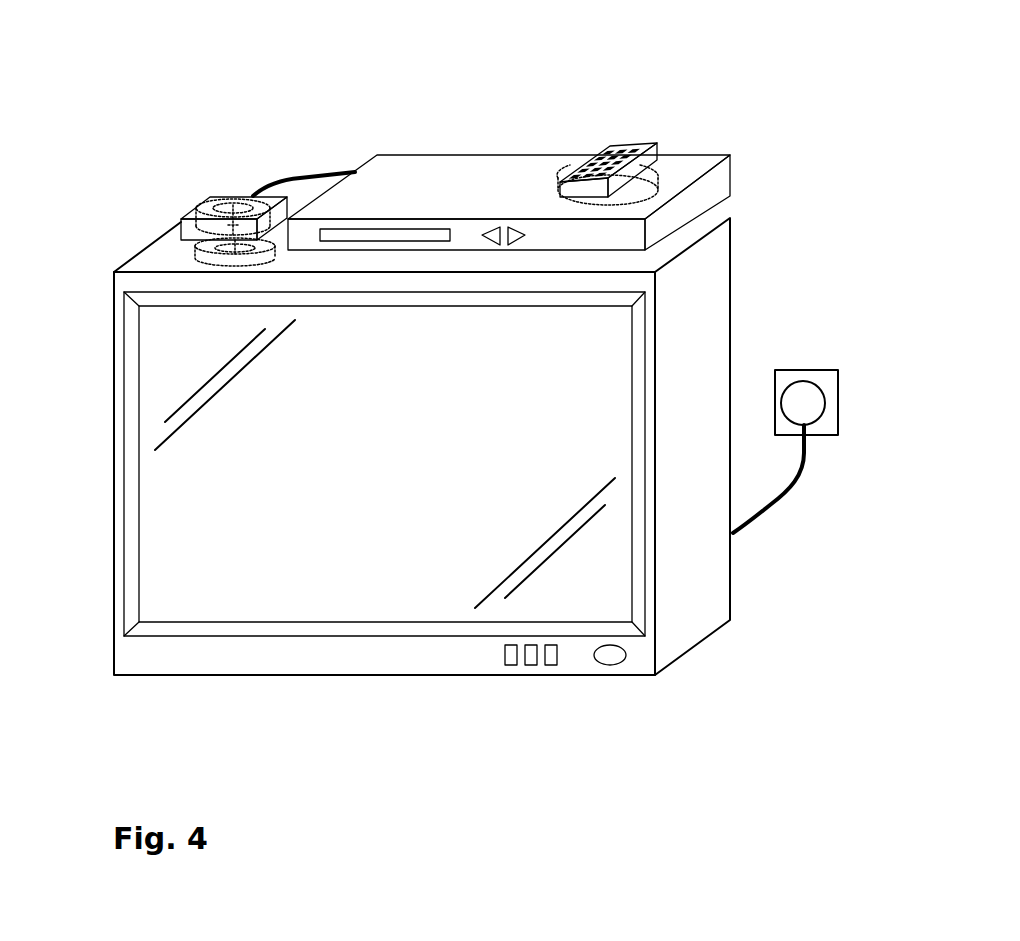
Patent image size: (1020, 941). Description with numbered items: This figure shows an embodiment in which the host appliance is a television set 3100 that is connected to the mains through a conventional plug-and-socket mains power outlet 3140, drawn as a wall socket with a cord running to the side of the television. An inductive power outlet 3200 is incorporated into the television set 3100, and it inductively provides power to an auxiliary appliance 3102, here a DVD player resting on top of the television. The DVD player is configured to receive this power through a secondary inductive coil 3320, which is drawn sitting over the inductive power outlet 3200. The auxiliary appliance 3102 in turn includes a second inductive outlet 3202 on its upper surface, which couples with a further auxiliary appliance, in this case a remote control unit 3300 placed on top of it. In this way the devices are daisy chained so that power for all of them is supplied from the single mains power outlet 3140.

The television set 3100 is at (682, 623).
The auxiliary appliance 3102 is at (722, 180).
The mains power outlet 3140 is at (825, 377).
The inductive power outlet 3200 is at (203, 256).
The second inductive outlet 3202 is at (647, 178).
The remote control unit 3300 is at (610, 148).
The secondary inductive coil 3320 is at (230, 200).